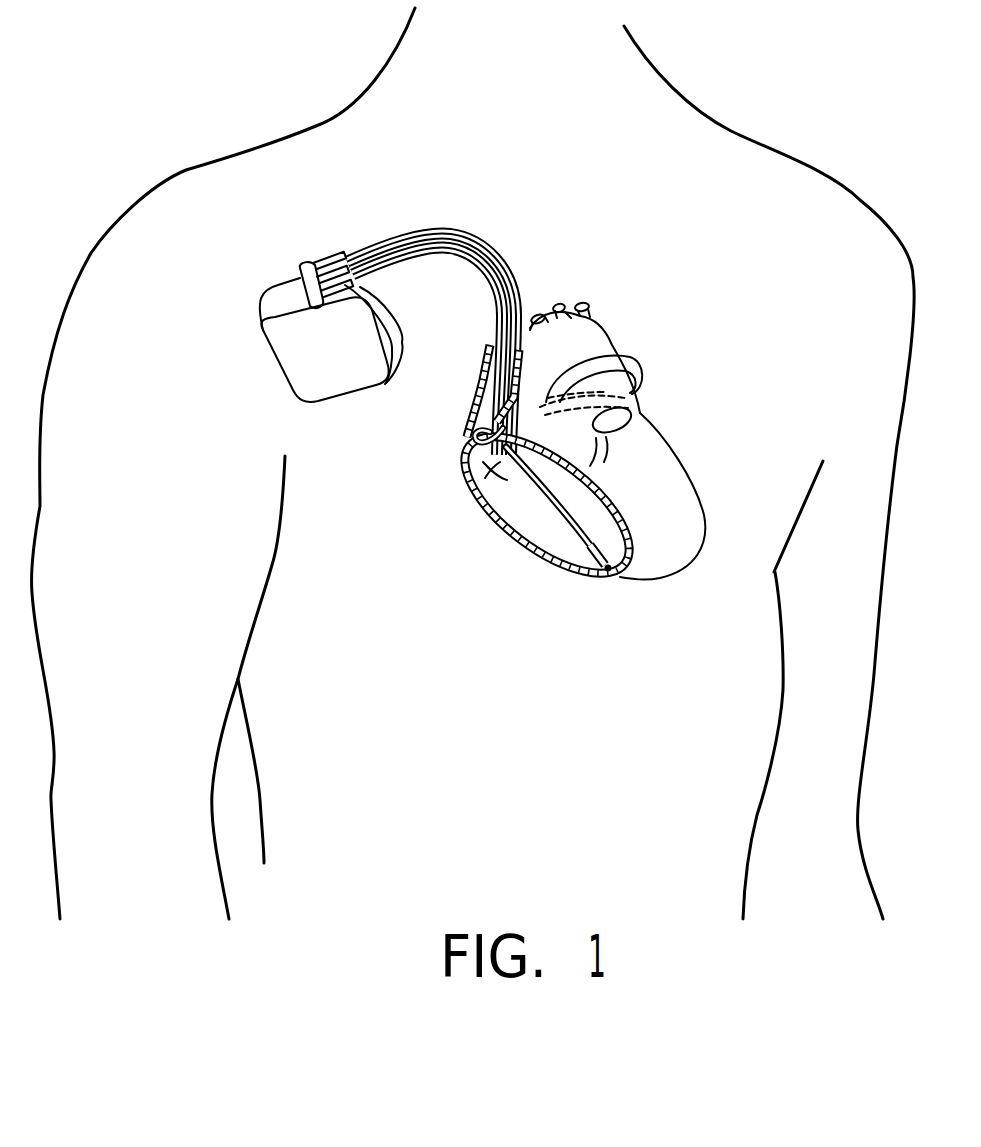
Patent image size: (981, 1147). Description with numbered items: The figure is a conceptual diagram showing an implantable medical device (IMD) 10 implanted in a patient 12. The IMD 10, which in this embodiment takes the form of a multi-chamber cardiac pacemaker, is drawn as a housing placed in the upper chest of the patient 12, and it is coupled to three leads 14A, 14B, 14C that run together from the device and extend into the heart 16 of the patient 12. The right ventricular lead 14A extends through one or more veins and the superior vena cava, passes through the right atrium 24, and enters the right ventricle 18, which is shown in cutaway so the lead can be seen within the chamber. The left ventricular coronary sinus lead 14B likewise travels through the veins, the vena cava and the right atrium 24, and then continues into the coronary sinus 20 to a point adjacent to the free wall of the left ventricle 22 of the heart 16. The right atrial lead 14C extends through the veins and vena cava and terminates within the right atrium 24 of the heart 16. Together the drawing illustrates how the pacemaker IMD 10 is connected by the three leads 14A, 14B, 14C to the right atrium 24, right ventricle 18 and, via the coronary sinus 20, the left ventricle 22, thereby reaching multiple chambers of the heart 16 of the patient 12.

The implantable medical device 10 is at (251, 371).
The patient 12 is at (826, 98).
The right ventricular lead 14A is at (493, 293).
The left ventricular coronary sinus lead 14B is at (517, 287).
The right atrial lead 14C is at (450, 267).
The heart 16 is at (696, 578).
The right ventricle 18 is at (549, 543).
The coronary sinus 20 is at (539, 410).
The left ventricle 22 is at (670, 490).
The right atrium 24 is at (488, 460).